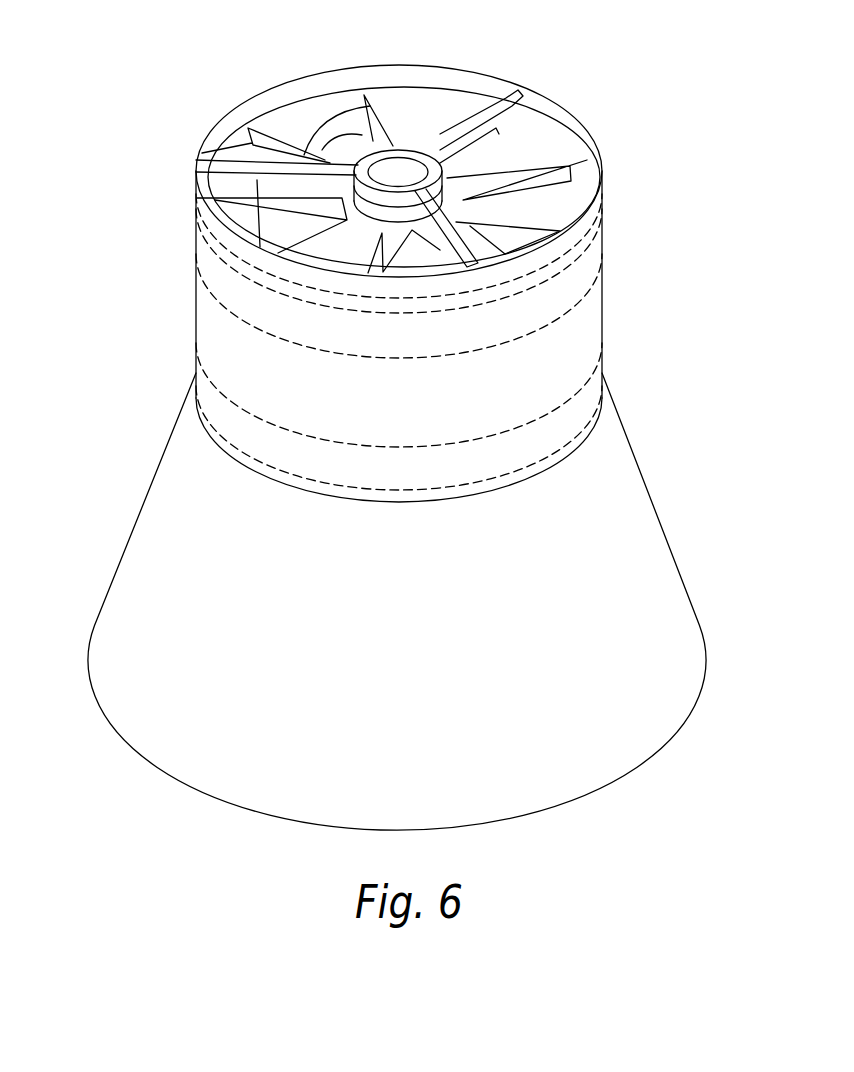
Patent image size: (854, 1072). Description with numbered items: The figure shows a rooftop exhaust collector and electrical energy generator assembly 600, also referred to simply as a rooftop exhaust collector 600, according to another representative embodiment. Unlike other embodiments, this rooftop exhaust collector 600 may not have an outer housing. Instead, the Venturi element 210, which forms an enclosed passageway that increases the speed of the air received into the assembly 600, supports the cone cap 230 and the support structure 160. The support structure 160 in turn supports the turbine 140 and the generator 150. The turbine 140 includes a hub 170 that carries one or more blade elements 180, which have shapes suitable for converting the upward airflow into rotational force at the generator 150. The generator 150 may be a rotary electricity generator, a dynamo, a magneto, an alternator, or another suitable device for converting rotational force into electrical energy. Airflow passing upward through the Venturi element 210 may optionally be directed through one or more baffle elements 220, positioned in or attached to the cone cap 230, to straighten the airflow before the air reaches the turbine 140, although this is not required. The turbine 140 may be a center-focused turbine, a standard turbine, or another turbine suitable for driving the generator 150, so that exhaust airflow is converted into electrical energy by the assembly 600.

The rooftop exhaust collector and electrical energy generator assembly 600 is at (123, 151).
The turbine 140 is at (335, 123).
The generator 150 is at (393, 178).
The support structure 160 is at (508, 103).
The hub 170 is at (452, 203).
The blade elements 180 is at (237, 178).
The Venturi element 210 is at (660, 590).
The baffle elements 220 is at (603, 240).
The cone cap 230 is at (603, 317).